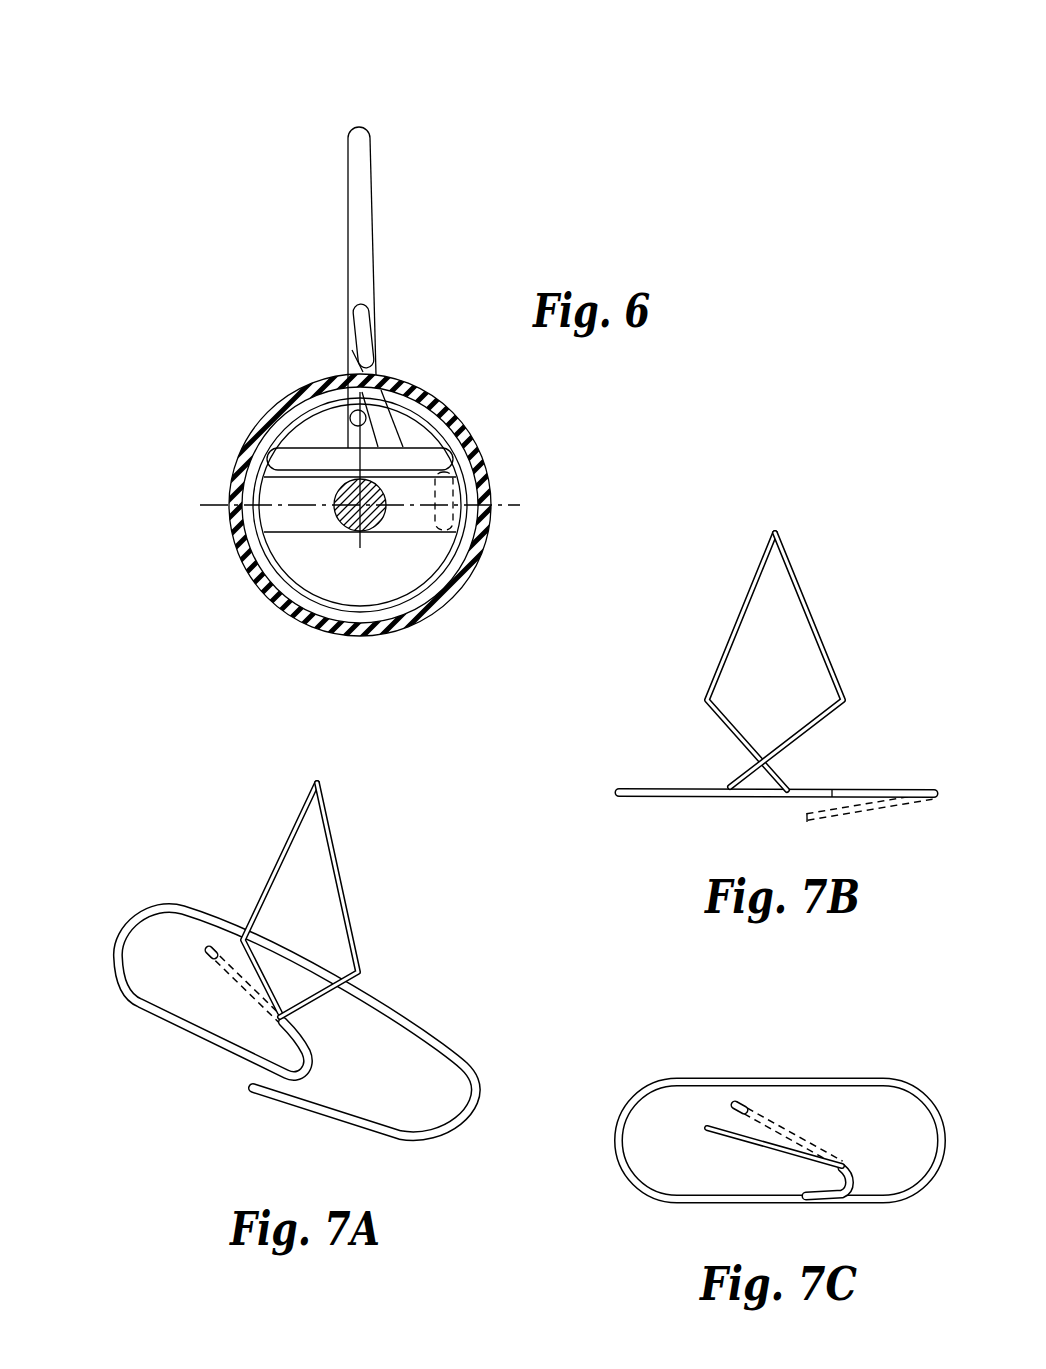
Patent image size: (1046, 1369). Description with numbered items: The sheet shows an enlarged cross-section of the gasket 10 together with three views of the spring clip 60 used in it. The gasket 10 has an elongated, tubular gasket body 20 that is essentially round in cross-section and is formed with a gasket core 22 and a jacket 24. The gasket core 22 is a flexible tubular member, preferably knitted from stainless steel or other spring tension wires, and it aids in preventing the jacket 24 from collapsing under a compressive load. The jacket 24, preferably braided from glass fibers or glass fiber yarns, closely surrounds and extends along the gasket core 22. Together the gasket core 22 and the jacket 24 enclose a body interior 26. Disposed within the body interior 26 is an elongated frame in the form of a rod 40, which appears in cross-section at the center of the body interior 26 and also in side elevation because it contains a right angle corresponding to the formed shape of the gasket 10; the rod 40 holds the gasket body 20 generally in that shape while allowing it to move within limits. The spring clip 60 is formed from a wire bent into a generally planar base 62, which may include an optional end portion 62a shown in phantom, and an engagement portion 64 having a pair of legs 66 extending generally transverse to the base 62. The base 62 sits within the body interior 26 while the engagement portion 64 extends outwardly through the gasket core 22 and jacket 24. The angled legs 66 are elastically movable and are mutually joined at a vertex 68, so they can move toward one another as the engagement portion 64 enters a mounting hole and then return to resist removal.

In FIG. 6, the gasket 10 is at (175, 352).
In FIG. 6, the gasket body 20 is at (175, 470).
In FIG. 6, the gasket core 22 is at (260, 542).
In FIG. 6, the jacket 24 is at (272, 602).
In FIG. 6, the body interior 26 is at (367, 575).
In FIG. 6, the rod 40 is at (370, 512).
In FIG. 7A, the spring clip 60 is at (190, 808).
In FIG. 7B, the spring clip 60 is at (630, 684).
In FIG. 7C, the spring clip 60 is at (635, 1058).
In FIG. 6, the base 62 is at (432, 460).
In FIG. 7A, the base 62 is at (124, 983).
In FIG. 7B, the base 62 is at (638, 795).
In FIG. 7C, the base 62 is at (625, 1170).
In FIG. 6, the end portion 62a is at (457, 493).
In FIG. 7A, the end portion 62a is at (225, 972).
In FIG. 7B, the end portion 62a is at (877, 808).
In FIG. 7C, the end portion 62a is at (770, 1113).
In FIG. 6, the engagement portion 64 is at (413, 267).
In FIG. 7A, the engagement portion 64 is at (378, 858).
In FIG. 7B, the engagement portion 64 is at (858, 603).
In FIG. 7C, the engagement portion 64 is at (843, 1092).
In FIG. 6, the legs 66 is at (360, 262).
In FIG. 7A, the legs 66 is at (260, 888).
In FIG. 7B, the legs 66 is at (732, 637).
In FIG. 6, the vertex 68 is at (356, 135).
In FIG. 7A, the vertex 68 is at (317, 787).
In FIG. 7B, the vertex 68 is at (775, 533).